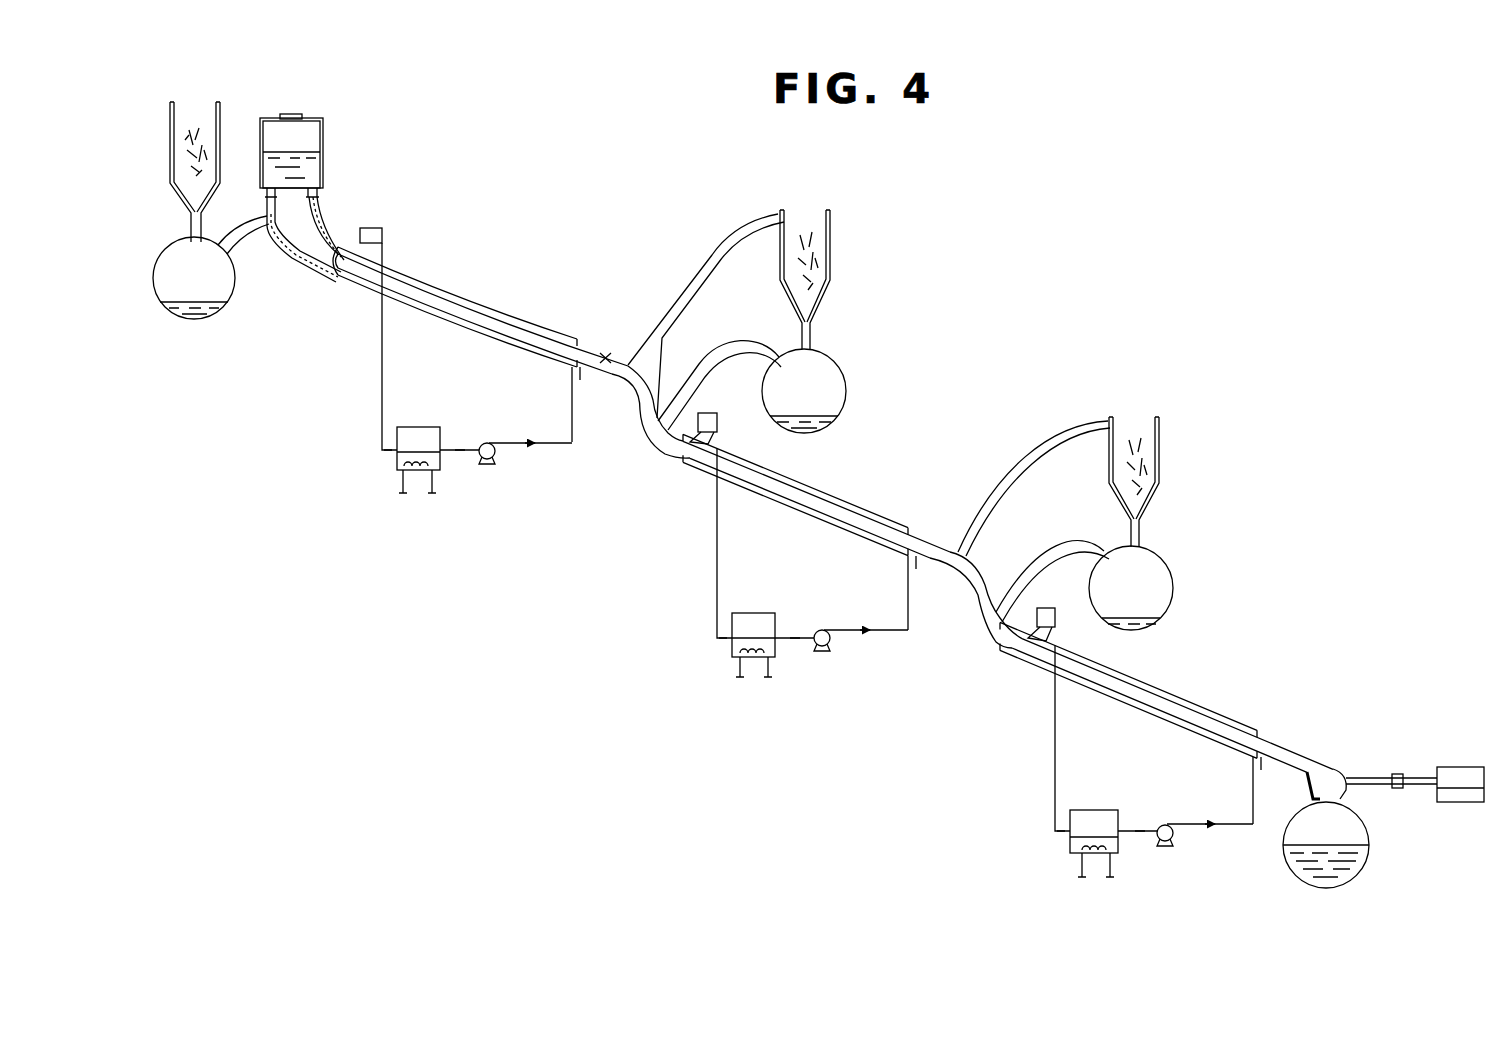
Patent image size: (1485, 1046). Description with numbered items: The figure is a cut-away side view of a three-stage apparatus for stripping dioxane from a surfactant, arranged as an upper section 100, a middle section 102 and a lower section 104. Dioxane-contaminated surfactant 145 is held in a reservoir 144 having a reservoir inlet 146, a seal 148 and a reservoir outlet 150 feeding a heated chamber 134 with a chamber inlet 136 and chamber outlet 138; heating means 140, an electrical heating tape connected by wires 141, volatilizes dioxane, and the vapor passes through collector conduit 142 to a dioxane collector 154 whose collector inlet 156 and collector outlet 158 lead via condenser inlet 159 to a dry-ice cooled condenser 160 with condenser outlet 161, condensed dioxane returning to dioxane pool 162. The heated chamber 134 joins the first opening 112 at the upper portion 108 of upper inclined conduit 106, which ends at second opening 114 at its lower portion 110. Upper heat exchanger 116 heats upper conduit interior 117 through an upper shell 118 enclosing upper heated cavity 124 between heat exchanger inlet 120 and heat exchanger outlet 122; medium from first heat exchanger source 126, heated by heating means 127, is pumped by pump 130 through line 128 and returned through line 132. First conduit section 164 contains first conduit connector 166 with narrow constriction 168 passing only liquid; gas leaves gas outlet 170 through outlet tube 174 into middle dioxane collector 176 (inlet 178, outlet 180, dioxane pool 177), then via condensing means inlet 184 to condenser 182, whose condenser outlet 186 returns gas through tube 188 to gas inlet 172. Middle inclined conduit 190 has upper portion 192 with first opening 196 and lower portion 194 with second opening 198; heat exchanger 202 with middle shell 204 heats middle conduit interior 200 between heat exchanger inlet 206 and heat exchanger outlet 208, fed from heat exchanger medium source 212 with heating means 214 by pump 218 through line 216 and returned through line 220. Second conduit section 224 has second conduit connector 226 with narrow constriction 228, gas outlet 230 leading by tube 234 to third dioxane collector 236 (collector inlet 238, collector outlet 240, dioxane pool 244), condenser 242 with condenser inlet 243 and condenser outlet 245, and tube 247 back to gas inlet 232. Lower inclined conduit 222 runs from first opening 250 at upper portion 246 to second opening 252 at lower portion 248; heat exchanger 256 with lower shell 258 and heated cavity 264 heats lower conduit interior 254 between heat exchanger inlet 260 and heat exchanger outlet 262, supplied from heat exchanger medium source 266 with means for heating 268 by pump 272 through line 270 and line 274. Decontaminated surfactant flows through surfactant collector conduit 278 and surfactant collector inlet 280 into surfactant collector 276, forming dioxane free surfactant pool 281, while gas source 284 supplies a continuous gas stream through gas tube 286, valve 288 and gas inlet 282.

The upper section 100 is at (500, 312).
The middle section 102 is at (863, 506).
The lower section 104 is at (1192, 698).
The upper inclined conduit 106 is at (549, 330).
The upper portion 108 is at (334, 286).
The lower portion 110 is at (632, 402).
The first opening 112 is at (323, 302).
The second opening 114 is at (605, 352).
The upper heat exchanger 116 is at (444, 293).
The upper conduit interior 117 is at (512, 340).
The upper shell 118 is at (460, 328).
The heat exchanger inlet 120 is at (570, 387).
The heat exchanger outlet 122 is at (382, 233).
The upper heated cavity 124 is at (425, 312).
The first heat exchanger source 126 is at (418, 448).
The heating means 127 is at (400, 484).
The line 128 is at (478, 458).
The pump 130 is at (496, 456).
The line 132 is at (382, 402).
The heated chamber 134 is at (219, 196).
The chamber inlet 136 is at (322, 203).
The chamber outlet 138 is at (270, 228).
The heating means 140 is at (290, 260).
The wires 141 is at (306, 290).
The collector conduit 142 is at (247, 225).
The reservoir 144 is at (324, 140).
The contaminated surfactant 145 is at (320, 154).
The reservoir inlet 146 is at (281, 115).
The seal 148 is at (303, 118).
The reservoir outlet 150 is at (300, 179).
The dioxane collector 154 is at (158, 288).
The collector inlet 156 is at (231, 266).
The collector outlet 158 is at (191, 242).
The condenser inlet 159 is at (189, 216).
The condenser 160 is at (215, 104).
The condenser outlet 161 is at (168, 107).
The dioxane pool 162 is at (196, 312).
The first conduit section 164 is at (641, 444).
The first conduit connector 166 is at (650, 393).
The narrow constriction 168 is at (634, 391).
The gas outlet 170 is at (688, 418).
The gas inlet 172 is at (628, 363).
The outlet tube 174 is at (722, 345).
The middle dioxane collector 176 is at (847, 388).
The dioxane pool 177 is at (821, 423).
The middle dioxane collector inlet 178 is at (770, 364).
The middle dioxane collector outlet 180 is at (818, 352).
The condenser 182 is at (831, 243).
The condensing means inlet 184 is at (811, 324).
The condenser outlet 186 is at (781, 210).
The tube 188 is at (720, 248).
The middle inclined conduit 190 is at (801, 482).
The upper portion 192 is at (656, 460).
The lower portion 194 is at (920, 562).
The first opening 196 is at (676, 450).
The second opening 198 is at (928, 538).
The middle conduit interior 200 is at (838, 529).
The heat exchanger 202 is at (754, 494).
The middle shell 204 is at (800, 517).
The heat exchanger inlet 206 is at (907, 578).
The heat exchanger outlet 208 is at (731, 436).
The heat exchanger medium source 212 is at (753, 635).
The heating means 214 is at (740, 662).
The line 216 is at (812, 646).
The pump 218 is at (830, 646).
The line 220 is at (717, 578).
The lower inclined conduit 222 is at (1128, 682).
The second conduit section 224 is at (976, 628).
The second conduit connector 226 is at (986, 580).
The narrow constriction 228 is at (978, 598).
The gas outlet 230 is at (1020, 600).
The gas inlet 232 is at (968, 552).
The tube 234 is at (1062, 540).
The third dioxane collector 236 is at (1174, 594).
The collector inlet 238 is at (1107, 551).
The collector outlet 240 is at (1142, 557).
The condenser 242 is at (1161, 438).
The condenser inlet 243 is at (1140, 537).
The dioxane pool 244 is at (1161, 620).
The condenser outlet 245 is at (1111, 416).
The upper portion 246 is at (1008, 656).
The tube 247 is at (1046, 440).
The lower portion 248 is at (1310, 789).
The first opening 250 is at (996, 652).
The second opening 252 is at (1278, 742).
The lower conduit interior 254 is at (1100, 687).
The heat exchanger 256 is at (1132, 708).
The lower shell 258 is at (1165, 723).
The heat exchanger inlet 260 is at (1250, 770).
The heat exchanger outlet 262 is at (1056, 634).
The heated cavity 264 is at (1230, 720).
The heat exchanger medium source 266 is at (1094, 831).
The means for heating 268 is at (1082, 866).
The line 270 is at (1156, 847).
The pump 272 is at (1172, 843).
The line 274 is at (1055, 775).
The surfactant collector 276 is at (1285, 853).
The surfactant collector conduit 278 is at (1320, 752).
The surfactant collector inlet 280 is at (1369, 846).
The dioxane free surfactant pool 281 is at (1340, 871).
The gas inlet 282 is at (1344, 765).
The gas source 284 is at (1460, 784).
The gas tube 286 is at (1425, 786).
The valve 288 is at (1404, 774).